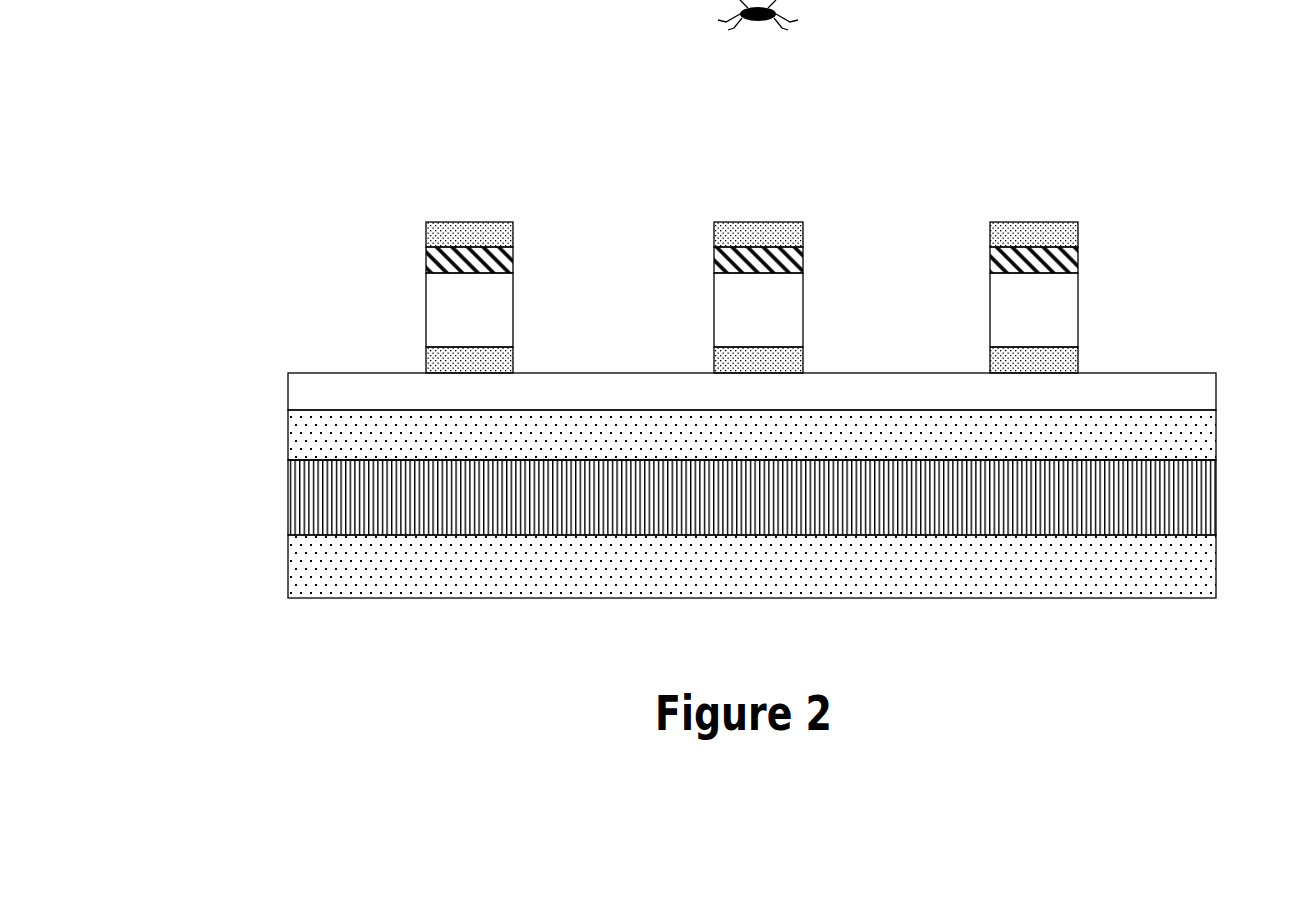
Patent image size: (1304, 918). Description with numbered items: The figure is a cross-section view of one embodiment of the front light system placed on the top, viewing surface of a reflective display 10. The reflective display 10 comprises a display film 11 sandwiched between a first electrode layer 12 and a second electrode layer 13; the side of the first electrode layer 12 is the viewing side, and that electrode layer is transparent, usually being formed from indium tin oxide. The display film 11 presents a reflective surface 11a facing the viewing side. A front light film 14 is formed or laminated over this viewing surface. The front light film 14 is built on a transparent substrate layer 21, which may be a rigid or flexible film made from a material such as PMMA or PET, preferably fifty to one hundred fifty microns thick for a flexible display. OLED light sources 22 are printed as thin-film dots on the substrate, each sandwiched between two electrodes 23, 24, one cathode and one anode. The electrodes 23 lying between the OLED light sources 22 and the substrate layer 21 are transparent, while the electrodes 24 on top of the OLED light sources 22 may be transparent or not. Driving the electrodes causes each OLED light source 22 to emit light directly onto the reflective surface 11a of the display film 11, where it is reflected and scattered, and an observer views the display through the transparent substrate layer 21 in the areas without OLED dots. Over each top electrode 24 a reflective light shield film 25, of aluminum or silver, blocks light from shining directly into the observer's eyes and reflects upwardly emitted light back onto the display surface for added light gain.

The reflective display 10 is at (263, 411).
The display film 11 is at (1205, 508).
The reflective surface 11a is at (1066, 459).
The first electrode layer 12 is at (1205, 435).
The second electrode layer 13 is at (1205, 560).
The front light film 14 is at (263, 223).
The substrate layer 21 is at (1205, 383).
The OLED light source 22 is at (752, 310).
The electrode 23 is at (425, 357).
The electrode 24 is at (425, 257).
The reflective light shield film 25 is at (491, 231).